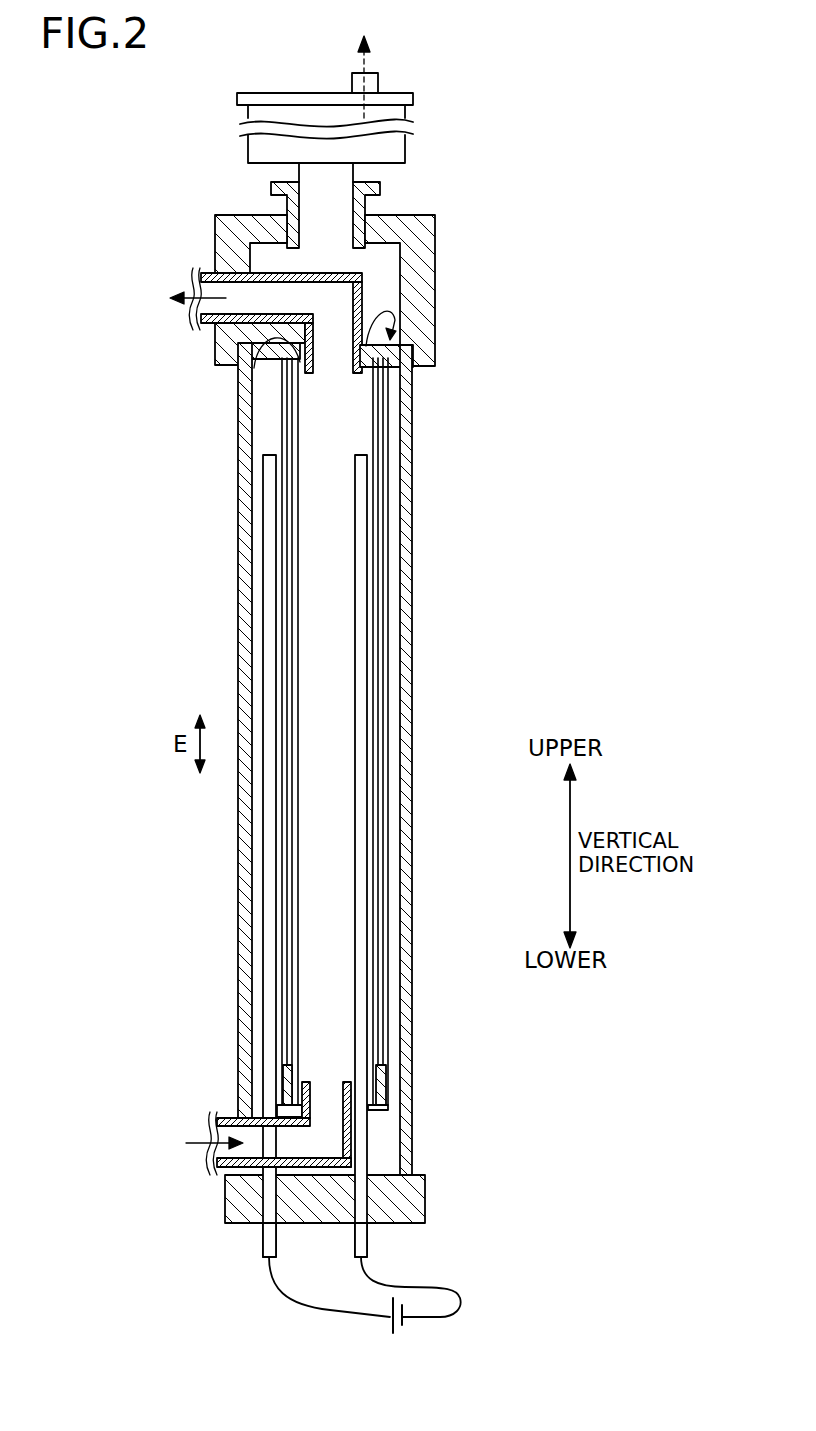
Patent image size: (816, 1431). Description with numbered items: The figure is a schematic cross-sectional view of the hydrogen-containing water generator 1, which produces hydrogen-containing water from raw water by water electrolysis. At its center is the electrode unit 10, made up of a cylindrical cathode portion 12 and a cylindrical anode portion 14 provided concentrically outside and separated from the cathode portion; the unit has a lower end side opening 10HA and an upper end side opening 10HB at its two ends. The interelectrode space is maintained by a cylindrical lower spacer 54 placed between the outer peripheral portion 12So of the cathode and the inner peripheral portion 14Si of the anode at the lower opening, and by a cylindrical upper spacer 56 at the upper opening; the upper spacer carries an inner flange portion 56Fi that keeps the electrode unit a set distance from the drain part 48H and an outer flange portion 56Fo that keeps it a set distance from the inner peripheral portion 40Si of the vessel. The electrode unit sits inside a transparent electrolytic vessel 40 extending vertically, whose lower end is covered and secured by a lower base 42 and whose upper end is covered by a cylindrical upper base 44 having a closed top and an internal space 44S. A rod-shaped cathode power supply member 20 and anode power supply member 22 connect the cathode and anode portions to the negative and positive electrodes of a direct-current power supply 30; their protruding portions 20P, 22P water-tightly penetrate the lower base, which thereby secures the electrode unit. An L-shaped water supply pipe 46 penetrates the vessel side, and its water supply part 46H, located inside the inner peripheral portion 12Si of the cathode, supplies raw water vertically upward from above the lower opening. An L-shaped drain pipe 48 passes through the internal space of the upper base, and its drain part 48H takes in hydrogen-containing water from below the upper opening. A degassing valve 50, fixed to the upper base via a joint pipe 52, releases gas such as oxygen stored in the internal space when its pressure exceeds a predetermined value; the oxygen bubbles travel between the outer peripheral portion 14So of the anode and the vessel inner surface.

The hydrogen-containing water generator 1 is at (112, 392).
The electrode unit 10 is at (262, 421).
The lower end side opening 10HA is at (353, 1120).
The upper end side opening 10HB is at (218, 352).
The cathode portion 12 is at (372, 498).
The inner peripheral portion of the cathode portion 12Si is at (300, 590).
The outer peripheral portion of the cathode portion 12So is at (295, 552).
The anode portion 14 is at (388, 545).
The inner peripheral portion of the anode portion 14Si is at (284, 637).
The outer peripheral portion of the anode portion 14So is at (274, 610).
The cathode power supply member 20 is at (358, 921).
The protruding portion of the cathode power supply member 20P is at (365, 1244).
The anode power supply member 22 is at (268, 860).
The protruding portion of the anode power supply member 22P is at (265, 1242).
The power supply 30 is at (408, 1350).
The electrolytic vessel 40 is at (406, 769).
The inner peripheral portion of the electrolytic vessel 40Si is at (290, 706).
The lower base 42 is at (420, 1205).
The upper base 44 is at (428, 232).
The internal space of the upper base 44S is at (378, 292).
The water supply pipe 46 is at (219, 1118).
The water supply part 46H is at (326, 1082).
The drain pipe 48 is at (210, 272).
The drain part 48H is at (330, 376).
The degassing valve 50 is at (392, 120).
The joint pipe 52 is at (360, 200).
The lower spacer 54 is at (378, 1078).
The upper spacer 56 is at (410, 332).
The inner flange portion 56Fi is at (392, 336).
The outer flange portion 56Fo is at (380, 349).